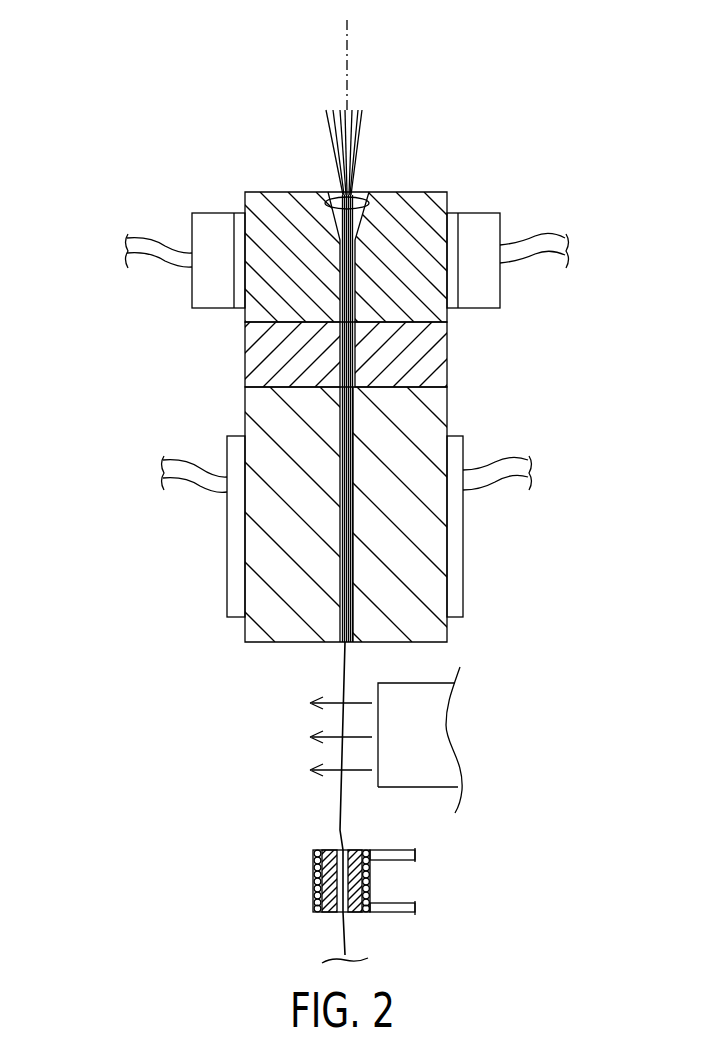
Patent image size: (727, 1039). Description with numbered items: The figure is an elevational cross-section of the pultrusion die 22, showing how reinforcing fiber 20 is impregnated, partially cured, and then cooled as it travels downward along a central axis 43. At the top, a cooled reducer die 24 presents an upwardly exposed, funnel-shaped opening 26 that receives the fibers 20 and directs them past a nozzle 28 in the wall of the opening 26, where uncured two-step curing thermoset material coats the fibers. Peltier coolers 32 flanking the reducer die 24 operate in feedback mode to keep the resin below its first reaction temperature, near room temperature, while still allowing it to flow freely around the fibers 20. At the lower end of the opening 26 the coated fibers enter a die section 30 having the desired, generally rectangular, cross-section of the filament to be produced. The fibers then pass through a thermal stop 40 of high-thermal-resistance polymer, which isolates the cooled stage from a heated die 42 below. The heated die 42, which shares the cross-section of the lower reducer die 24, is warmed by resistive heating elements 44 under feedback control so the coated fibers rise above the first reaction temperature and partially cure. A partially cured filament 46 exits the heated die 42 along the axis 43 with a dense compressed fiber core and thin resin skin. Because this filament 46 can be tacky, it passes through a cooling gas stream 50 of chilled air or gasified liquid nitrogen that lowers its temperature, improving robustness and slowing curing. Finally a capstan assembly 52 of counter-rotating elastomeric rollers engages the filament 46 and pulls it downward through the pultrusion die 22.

The reinforcing fiber 20 is at (356, 126).
The pultrusion die 22 is at (153, 162).
The reducer die 24 is at (245, 193).
The tapered opening 26 is at (370, 200).
The nozzle 28 is at (325, 197).
The die section 30 is at (340, 327).
The Peltier coolers 32 is at (207, 213).
The thermal stop 40 is at (440, 352).
The heated die 42 is at (270, 410).
The axis 43 is at (347, 68).
The resistive heating elements 44 is at (227, 525).
The partially cured filament 46 is at (347, 675).
The cooling gas stream 50 is at (446, 727).
The capstan assembly 52 is at (300, 846).